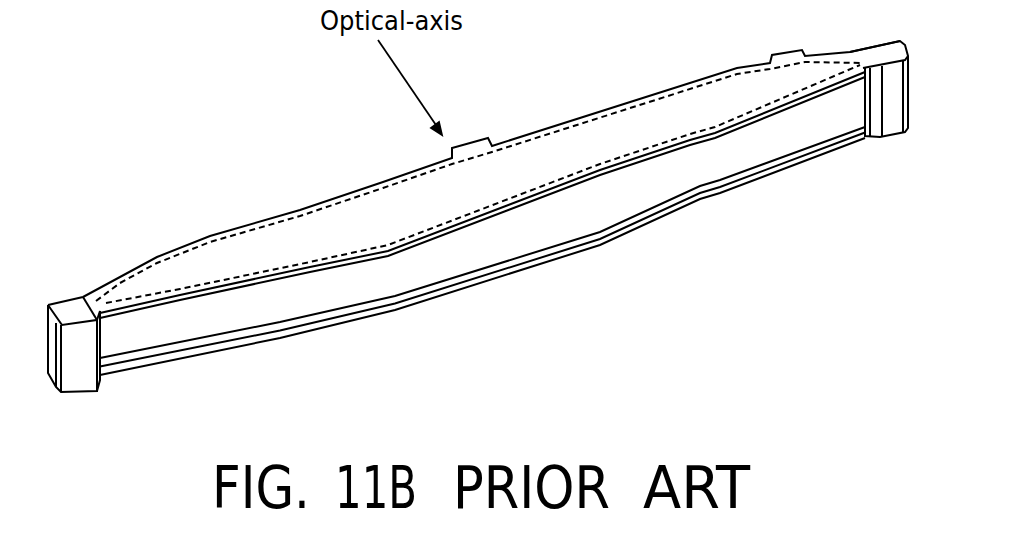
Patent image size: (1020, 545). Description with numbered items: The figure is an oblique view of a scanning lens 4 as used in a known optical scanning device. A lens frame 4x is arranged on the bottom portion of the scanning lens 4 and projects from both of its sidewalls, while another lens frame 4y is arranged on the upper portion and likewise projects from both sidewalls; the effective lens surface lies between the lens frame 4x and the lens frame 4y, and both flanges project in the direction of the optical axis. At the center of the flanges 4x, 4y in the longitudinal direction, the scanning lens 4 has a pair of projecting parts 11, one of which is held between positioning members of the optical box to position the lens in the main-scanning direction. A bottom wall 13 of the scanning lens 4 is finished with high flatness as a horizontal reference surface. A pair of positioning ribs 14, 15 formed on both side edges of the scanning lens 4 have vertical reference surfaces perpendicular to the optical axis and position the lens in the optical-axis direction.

The scanning lens 4 is at (640, 202).
The lens frame 4x is at (315, 320).
The lens frame 4y is at (546, 129).
The projecting part 11 is at (467, 150).
The bottom wall 13 is at (238, 352).
The positioning rib 14 is at (86, 390).
The positioning rib 15 is at (892, 130).